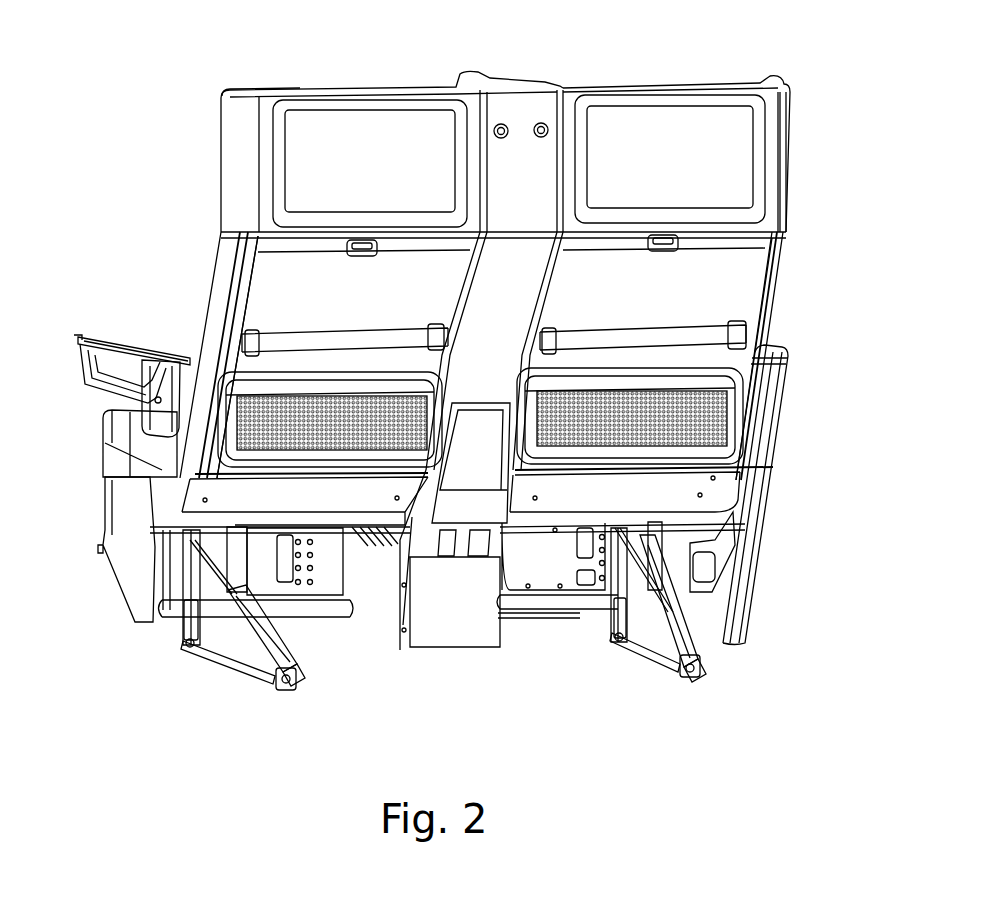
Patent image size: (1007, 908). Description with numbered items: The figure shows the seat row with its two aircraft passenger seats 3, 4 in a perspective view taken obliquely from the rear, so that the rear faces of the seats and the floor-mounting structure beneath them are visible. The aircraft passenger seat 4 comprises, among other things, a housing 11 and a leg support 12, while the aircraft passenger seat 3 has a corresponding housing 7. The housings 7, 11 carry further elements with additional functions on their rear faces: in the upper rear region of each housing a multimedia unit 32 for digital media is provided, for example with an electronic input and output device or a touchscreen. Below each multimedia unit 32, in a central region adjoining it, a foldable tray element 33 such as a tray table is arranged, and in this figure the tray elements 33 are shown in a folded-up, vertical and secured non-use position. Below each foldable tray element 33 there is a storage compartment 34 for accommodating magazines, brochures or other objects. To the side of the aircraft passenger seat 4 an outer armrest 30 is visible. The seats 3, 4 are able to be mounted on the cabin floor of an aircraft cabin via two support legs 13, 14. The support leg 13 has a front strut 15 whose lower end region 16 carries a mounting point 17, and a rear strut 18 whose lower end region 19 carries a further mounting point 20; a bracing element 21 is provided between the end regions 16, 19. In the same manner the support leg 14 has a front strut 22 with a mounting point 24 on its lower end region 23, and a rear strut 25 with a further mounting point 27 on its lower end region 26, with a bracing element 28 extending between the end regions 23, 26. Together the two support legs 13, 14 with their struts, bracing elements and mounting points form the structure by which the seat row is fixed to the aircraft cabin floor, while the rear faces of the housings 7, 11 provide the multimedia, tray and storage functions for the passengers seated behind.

The aircraft passenger seat 3 is at (690, 62).
The aircraft passenger seat 4 is at (362, 72).
The housing 7 is at (788, 132).
The housing 11 is at (243, 88).
The leg support 12 is at (100, 548).
The support leg 13 is at (710, 664).
The support leg 14 is at (296, 655).
The front strut 15 is at (600, 626).
The lower end region 16 is at (603, 640).
The mounting point 17 is at (612, 648).
The rear strut 18 is at (688, 622).
The lower end region 19 is at (710, 678).
The mounting point 20 is at (691, 682).
The bracing element 21 is at (645, 665).
The front strut 22 is at (170, 633).
The lower end region 23 is at (176, 646).
The mounting point 24 is at (183, 648).
The rear strut 25 is at (270, 636).
The lower end region 26 is at (298, 690).
The mounting point 27 is at (283, 692).
The bracing element 28 is at (220, 670).
The outer armrest 30 is at (106, 330).
The multimedia unit 32 is at (384, 167).
The foldable tray element 33 is at (270, 292).
The storage compartment 34 is at (278, 390).